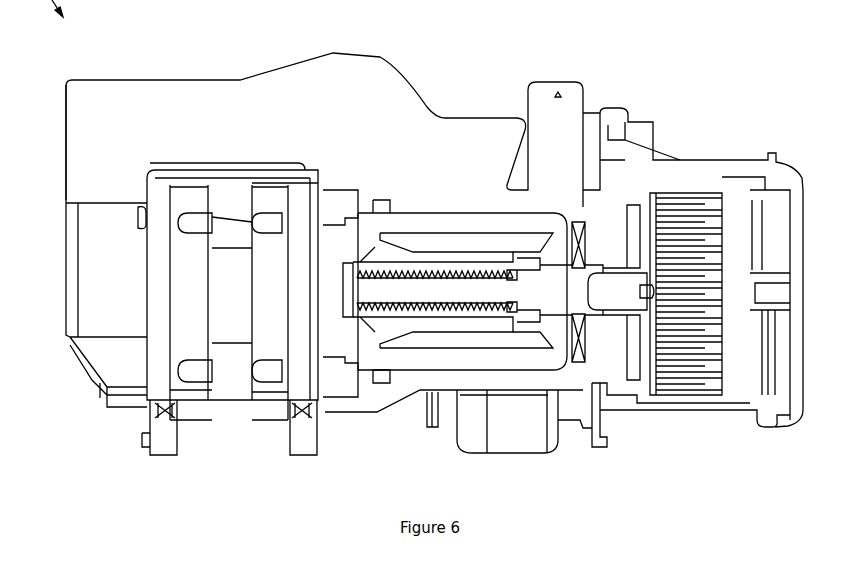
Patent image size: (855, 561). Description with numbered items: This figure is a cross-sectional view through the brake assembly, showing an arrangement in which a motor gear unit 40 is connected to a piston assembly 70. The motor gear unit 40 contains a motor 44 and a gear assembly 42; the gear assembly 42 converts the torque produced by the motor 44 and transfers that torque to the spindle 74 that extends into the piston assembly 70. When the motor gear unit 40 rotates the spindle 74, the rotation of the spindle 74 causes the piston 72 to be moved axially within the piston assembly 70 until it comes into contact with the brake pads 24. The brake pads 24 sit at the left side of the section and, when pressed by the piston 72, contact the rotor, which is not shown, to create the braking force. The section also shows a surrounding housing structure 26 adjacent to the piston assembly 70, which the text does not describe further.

The mounting bracket with pins 24 is at (288, 298).
The housing 26 is at (400, 408).
The motor 40 is at (733, 127).
The motor shaft bearing coupling 42 is at (640, 223).
The motor end cap 44 is at (748, 390).
The actuator housing 70 is at (468, 190).
The drive nut sleeve 72 is at (400, 220).
The lead screw 74 is at (510, 287).